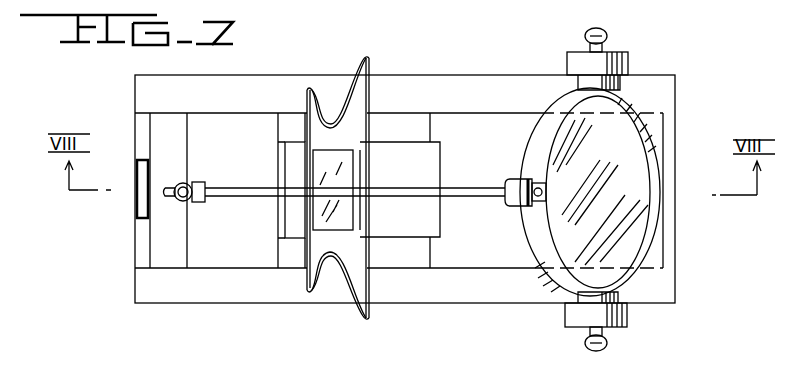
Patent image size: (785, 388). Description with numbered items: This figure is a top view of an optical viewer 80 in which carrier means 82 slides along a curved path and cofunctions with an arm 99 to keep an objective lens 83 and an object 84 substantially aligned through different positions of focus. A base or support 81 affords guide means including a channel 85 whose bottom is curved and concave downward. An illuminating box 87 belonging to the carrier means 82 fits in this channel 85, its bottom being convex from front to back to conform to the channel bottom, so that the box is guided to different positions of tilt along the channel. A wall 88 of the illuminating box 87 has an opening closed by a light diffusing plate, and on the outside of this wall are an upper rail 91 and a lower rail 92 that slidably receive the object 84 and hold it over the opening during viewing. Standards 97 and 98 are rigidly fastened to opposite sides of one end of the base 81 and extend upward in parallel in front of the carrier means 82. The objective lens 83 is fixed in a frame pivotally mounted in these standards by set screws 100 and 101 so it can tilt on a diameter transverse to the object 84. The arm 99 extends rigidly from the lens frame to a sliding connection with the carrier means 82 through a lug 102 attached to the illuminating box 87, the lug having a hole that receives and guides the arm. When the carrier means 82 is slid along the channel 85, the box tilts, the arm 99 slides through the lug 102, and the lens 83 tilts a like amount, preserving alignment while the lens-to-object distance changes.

The optical viewer 80 is at (472, 70).
The base or support 81 is at (495, 305).
The carrier means 82 is at (238, 133).
The objective lens 83 is at (627, 238).
The object 84 is at (342, 178).
The channel 85 is at (146, 240).
The illuminating box 87 is at (233, 258).
The wall of the illuminating box 88 is at (430, 222).
The upper rail 91 is at (295, 162).
The lower rail 92 is at (372, 175).
The standard 97 is at (630, 318).
The standard 98 is at (632, 62).
The arm 99 is at (472, 185).
The set screw 100 is at (605, 38).
The set screw 101 is at (607, 335).
The lug 102 is at (192, 207).